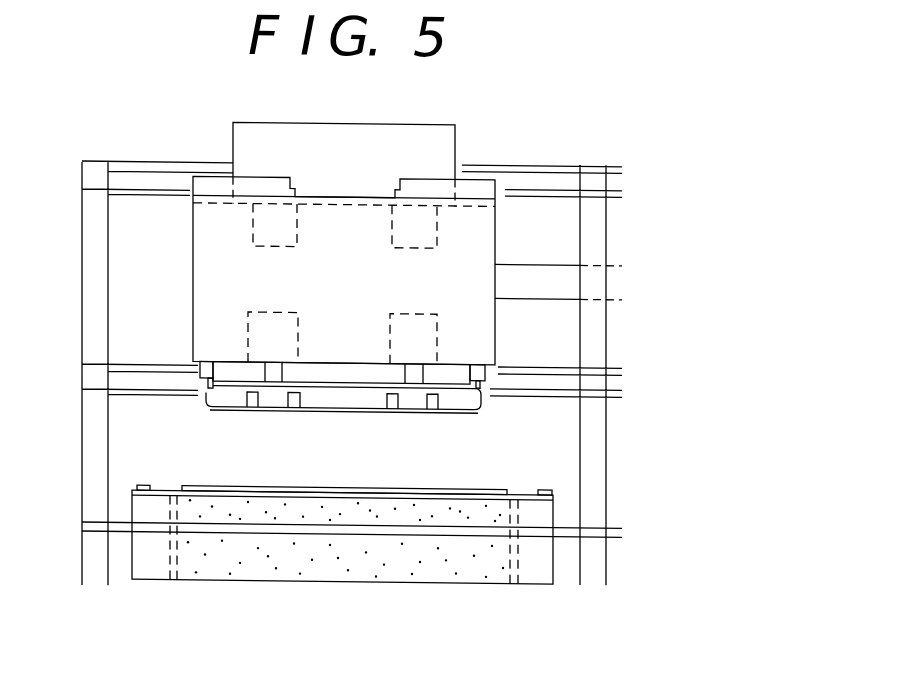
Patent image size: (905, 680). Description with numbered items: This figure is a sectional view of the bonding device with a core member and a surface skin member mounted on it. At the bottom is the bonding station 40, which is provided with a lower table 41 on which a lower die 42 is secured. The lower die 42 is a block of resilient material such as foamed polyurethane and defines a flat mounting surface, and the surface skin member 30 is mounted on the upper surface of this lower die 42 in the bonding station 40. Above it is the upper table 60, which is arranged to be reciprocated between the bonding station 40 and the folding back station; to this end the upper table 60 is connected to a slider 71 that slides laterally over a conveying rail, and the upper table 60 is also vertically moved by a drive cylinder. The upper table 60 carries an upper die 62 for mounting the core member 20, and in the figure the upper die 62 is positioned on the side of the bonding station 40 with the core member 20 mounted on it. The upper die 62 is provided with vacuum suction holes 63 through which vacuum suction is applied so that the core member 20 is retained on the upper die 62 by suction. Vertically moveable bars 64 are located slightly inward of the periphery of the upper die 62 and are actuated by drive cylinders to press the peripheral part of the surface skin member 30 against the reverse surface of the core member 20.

The core member 20 is at (270, 410).
The surface skin member 30 is at (430, 485).
The bonding station 40 is at (183, 430).
The lower table 41 is at (482, 524).
The lower die 42 is at (340, 506).
The upper table 60 is at (457, 342).
The upper die 62 is at (410, 390).
The vacuum suction holes 63 is at (303, 394).
The vertically moveable bars 64 is at (210, 380).
The slider 71 is at (410, 140).